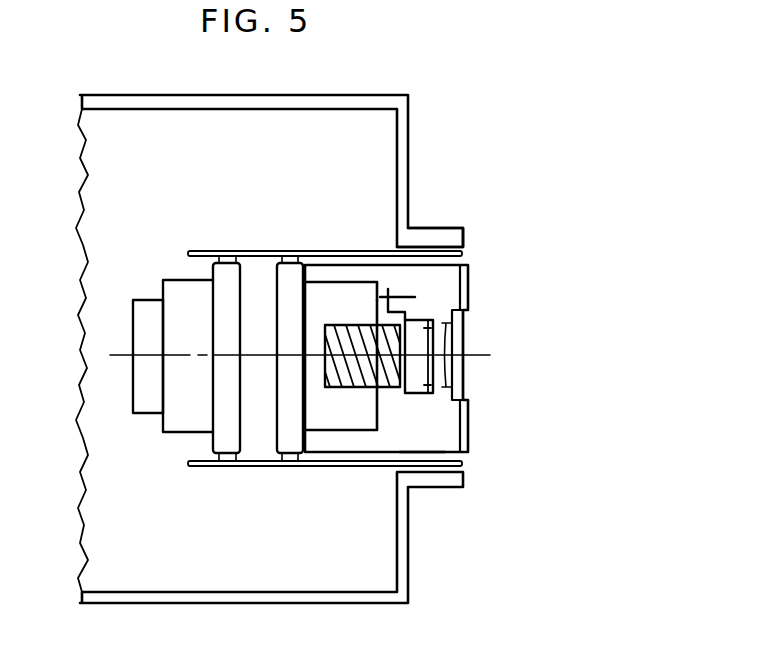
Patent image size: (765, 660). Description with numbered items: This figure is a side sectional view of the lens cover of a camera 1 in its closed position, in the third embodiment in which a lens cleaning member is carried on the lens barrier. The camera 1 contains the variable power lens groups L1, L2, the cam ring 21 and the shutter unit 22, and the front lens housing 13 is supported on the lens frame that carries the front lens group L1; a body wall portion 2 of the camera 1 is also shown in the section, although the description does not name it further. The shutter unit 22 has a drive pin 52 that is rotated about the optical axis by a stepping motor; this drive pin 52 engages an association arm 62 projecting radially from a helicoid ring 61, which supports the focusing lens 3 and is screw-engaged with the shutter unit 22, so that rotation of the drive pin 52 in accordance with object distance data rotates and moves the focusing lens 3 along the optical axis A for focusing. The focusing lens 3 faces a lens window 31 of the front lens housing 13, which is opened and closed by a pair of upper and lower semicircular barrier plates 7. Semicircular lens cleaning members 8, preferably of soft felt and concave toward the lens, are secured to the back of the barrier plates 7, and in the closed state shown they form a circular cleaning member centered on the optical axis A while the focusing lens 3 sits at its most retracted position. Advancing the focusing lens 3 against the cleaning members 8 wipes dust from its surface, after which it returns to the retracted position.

The camera 1 is at (410, 133).
The flange projection of wall 2 is at (433, 228).
The lens cleaning member 8 is at (468, 265).
The barrier plate 7 is at (457, 338).
The lens window 31 is at (466, 394).
The optical axis A is at (487, 350).
The focusing lens 3 is at (418, 393).
The front lens housing 13 is at (422, 452).
The helicoid ring 61 is at (362, 378).
The shutter unit 22 is at (330, 423).
The association arm 62 is at (373, 268).
The drive pin 52 is at (397, 293).
The cam ring 21 is at (258, 251).
The front lens group L1 is at (285, 433).
The variable power lens group L2 is at (218, 445).